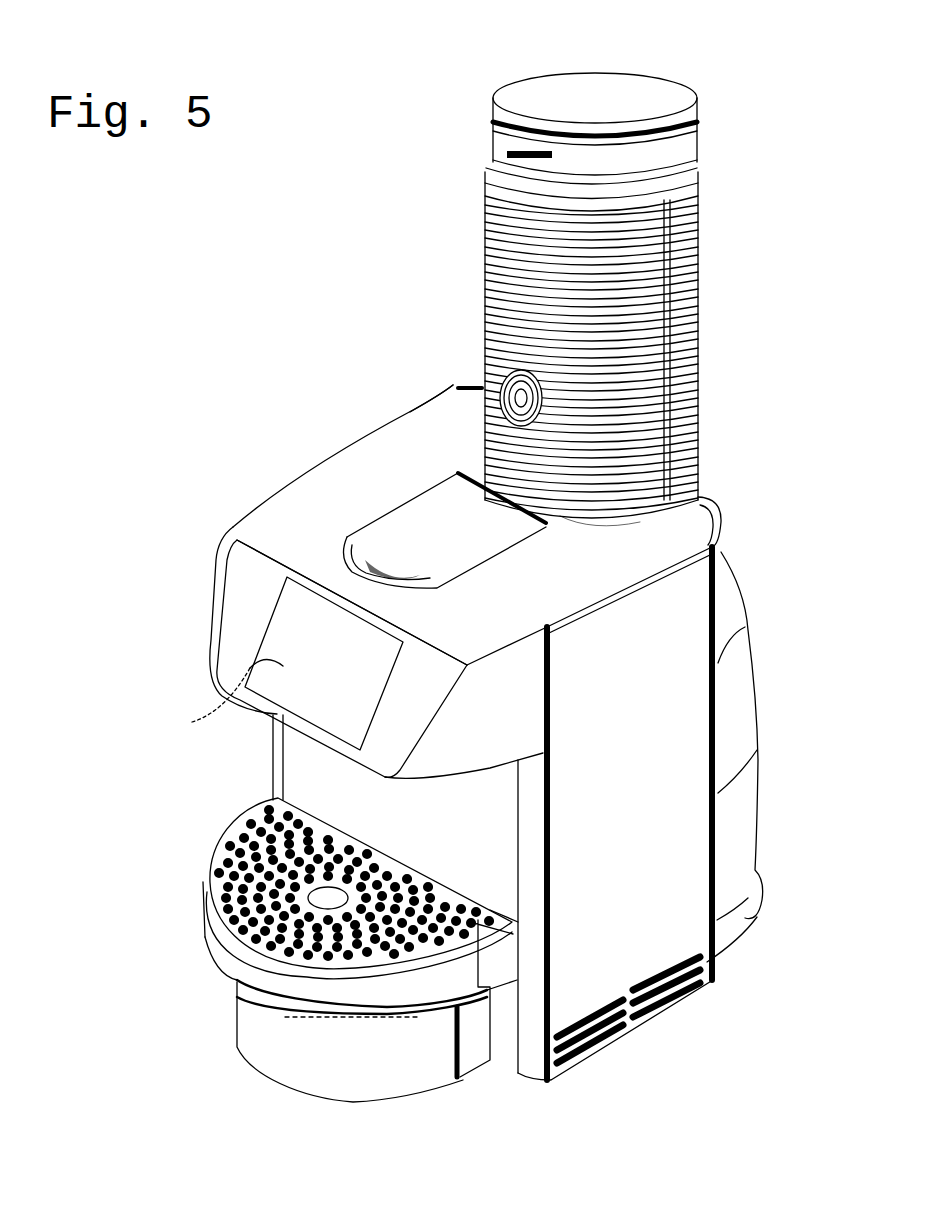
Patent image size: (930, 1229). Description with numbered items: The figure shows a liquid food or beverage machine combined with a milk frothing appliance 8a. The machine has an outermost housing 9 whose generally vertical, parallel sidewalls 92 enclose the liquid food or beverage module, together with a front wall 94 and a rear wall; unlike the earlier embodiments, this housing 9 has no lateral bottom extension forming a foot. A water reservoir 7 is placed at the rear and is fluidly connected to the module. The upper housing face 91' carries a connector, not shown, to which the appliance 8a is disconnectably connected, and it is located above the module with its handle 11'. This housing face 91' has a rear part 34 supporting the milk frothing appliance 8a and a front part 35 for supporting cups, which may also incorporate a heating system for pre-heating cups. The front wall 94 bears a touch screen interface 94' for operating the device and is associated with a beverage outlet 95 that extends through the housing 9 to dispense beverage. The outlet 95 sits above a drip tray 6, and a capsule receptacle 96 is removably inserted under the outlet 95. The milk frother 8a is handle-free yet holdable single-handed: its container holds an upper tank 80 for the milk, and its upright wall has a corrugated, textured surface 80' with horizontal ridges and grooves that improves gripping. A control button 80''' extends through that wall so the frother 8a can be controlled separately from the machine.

The drip tray 6 is at (208, 840).
The water reservoir 7 is at (775, 655).
The milk frothing appliance 8a is at (723, 141).
The housing 9 is at (678, 608).
The handle 11' is at (444, 522).
The rear part of housing face 34 is at (597, 512).
The front part of housing face 35 is at (312, 495).
The upper tank 80 is at (602, 97).
The textured upright surface 80' is at (640, 339).
The control button 80''' is at (458, 341).
The housing face 91' is at (415, 372).
The sidewalls 92 is at (640, 742).
The front wall 94 is at (341, 658).
The touch screen interface 94' is at (196, 701).
The beverage outlet 95 is at (290, 748).
The capsule receptacle 96 is at (438, 832).